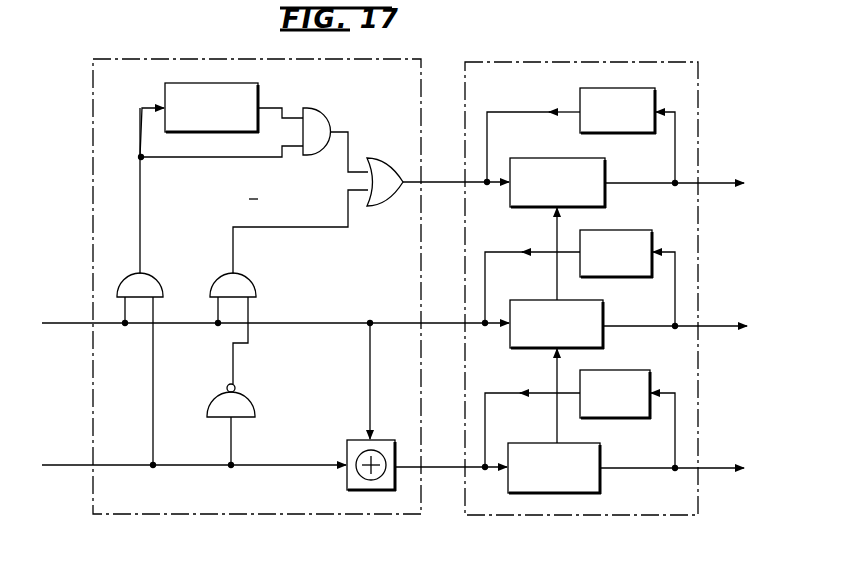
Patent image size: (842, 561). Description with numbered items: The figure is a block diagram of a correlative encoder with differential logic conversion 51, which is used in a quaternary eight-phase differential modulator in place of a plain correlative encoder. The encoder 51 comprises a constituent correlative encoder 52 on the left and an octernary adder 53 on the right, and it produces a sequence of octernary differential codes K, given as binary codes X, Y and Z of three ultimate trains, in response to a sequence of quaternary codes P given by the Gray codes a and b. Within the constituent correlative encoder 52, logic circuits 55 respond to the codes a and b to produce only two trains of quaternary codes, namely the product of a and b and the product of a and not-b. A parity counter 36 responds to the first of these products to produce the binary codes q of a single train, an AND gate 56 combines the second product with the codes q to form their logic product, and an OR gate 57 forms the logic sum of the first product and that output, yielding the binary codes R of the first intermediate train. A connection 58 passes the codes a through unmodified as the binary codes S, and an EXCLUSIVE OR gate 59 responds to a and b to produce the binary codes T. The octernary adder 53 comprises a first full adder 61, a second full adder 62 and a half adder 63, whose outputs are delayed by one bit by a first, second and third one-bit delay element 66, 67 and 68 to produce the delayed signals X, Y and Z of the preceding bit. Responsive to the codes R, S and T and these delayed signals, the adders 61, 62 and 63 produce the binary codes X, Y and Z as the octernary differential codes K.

The correlative encoder with differential logic conversion 51 is at (588, 525).
The constituent correlative encoder 52 is at (186, 58).
The octernary adder 53 is at (592, 62).
The parity counter 36 is at (258, 86).
The logic circuits 55 is at (242, 286).
The AND gate 56 is at (315, 112).
The OR gate 57 is at (381, 206).
The connection 58 is at (288, 324).
The EXCLUSIVE OR gate 59 is at (347, 450).
The first full adder 61 is at (546, 157).
The second full adder 62 is at (536, 299).
The half adder 63 is at (532, 443).
The first one-bit delay element 66 is at (622, 133).
The second one-bit delay element 67 is at (624, 277).
The third one-bit delay element 68 is at (622, 418).